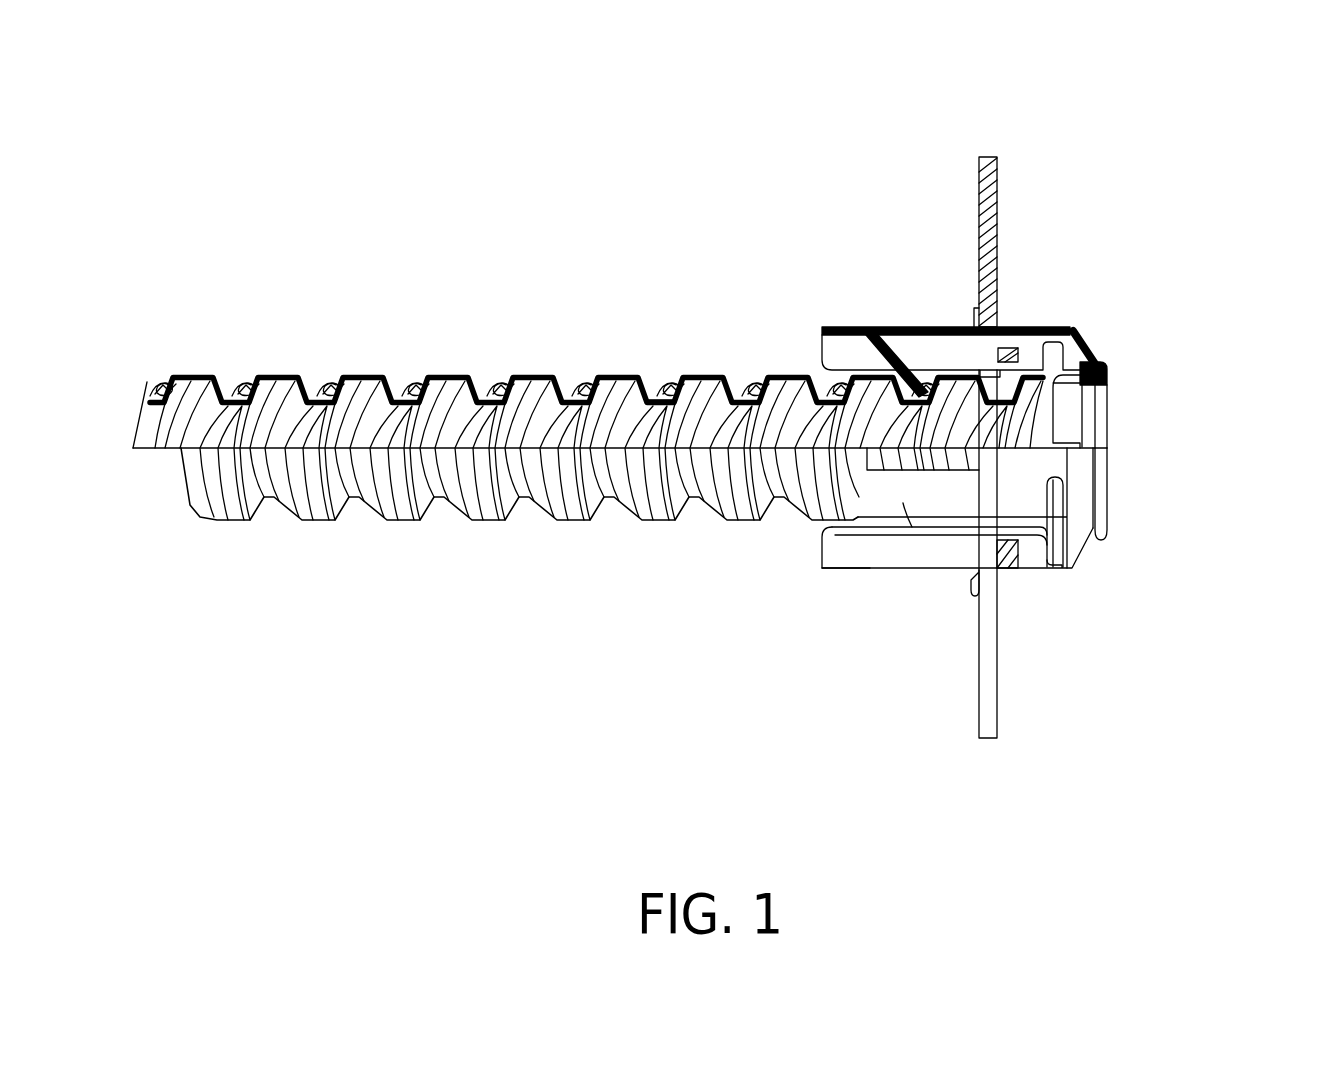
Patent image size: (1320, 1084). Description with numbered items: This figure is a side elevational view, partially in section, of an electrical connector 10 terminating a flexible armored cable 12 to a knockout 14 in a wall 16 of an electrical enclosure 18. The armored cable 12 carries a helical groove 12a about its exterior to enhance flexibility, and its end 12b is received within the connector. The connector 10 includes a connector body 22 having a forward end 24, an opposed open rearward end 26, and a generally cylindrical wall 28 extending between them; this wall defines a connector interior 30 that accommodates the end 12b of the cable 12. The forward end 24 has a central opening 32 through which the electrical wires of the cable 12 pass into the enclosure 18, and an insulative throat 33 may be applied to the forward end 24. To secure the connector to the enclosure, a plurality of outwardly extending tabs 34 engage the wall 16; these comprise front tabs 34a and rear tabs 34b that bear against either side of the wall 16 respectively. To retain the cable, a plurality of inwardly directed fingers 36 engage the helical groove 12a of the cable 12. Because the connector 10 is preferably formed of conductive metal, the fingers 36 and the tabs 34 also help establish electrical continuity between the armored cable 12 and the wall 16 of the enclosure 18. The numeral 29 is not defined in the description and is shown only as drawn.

The electrical connector 10 is at (1113, 350).
The cable 12 is at (515, 375).
The helical groove 12a is at (653, 397).
The end of cable 12b is at (605, 373).
The knockout 14 is at (997, 327).
The wall 16 is at (988, 233).
The electrical enclosure 18 is at (991, 157).
The connector body 22 is at (1050, 493).
The forward end 24 is at (1082, 482).
The open rearward end 26 is at (820, 558).
The cylindrical wall 28 is at (905, 505).
The lip 29 is at (847, 553).
The connector interior 30 is at (833, 527).
The central opening 32 is at (1088, 413).
The insulative throat 33 is at (1107, 363).
The outwardly extending tabs 34 is at (1017, 570).
The front tabs 34a is at (1017, 350).
The rear tabs 34b is at (972, 585).
The inwardly directed fingers 36 is at (890, 343).